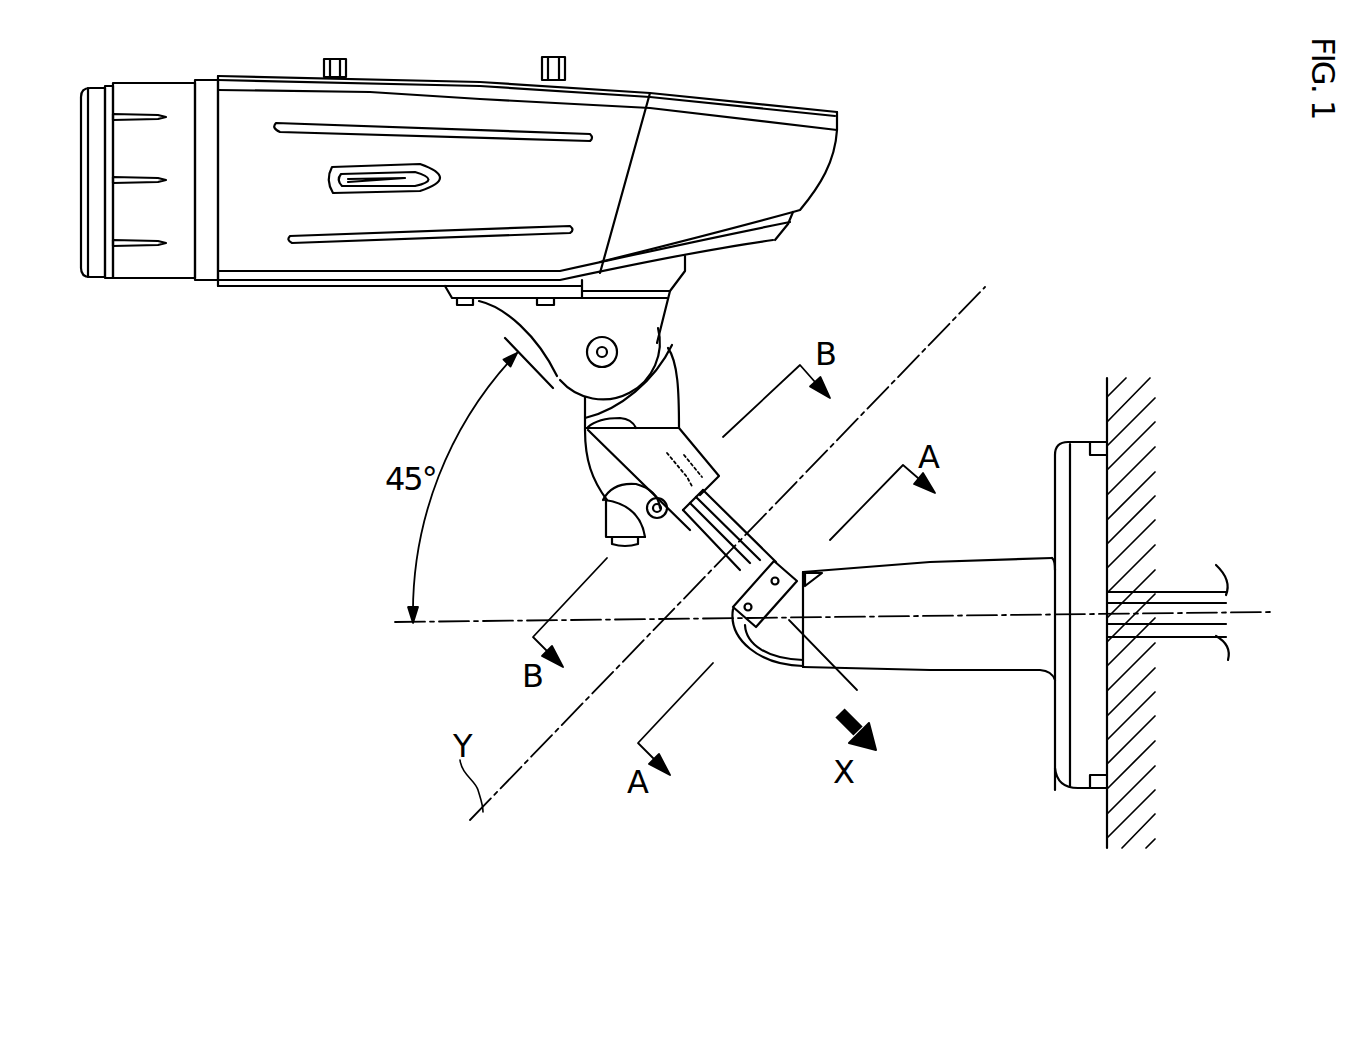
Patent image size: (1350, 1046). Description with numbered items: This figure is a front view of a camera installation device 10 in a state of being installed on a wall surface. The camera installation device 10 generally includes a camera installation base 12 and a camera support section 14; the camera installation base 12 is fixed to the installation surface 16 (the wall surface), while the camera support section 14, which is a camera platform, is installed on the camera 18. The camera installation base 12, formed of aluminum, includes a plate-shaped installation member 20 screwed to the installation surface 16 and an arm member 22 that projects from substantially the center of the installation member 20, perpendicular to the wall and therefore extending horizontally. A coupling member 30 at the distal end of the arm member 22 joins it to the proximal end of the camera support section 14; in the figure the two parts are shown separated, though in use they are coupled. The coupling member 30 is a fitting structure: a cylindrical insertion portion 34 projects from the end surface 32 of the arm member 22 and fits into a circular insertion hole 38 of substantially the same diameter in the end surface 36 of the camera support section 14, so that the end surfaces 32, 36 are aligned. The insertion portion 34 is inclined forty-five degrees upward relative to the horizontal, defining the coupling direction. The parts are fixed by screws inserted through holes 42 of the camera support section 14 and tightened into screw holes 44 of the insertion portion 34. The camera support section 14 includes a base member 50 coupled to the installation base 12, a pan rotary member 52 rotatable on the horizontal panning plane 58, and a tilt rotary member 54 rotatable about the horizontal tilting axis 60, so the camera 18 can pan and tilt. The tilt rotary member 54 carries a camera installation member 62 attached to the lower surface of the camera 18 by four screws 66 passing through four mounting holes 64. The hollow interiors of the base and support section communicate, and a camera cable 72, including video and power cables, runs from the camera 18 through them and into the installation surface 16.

The camera installation device 10 is at (738, 750).
The camera installation base 12 is at (987, 757).
The camera support section 14 is at (507, 570).
The installation surface 16 is at (1105, 402).
The camera 18 is at (805, 177).
The installation member 20 is at (1087, 467).
The arm member 22 is at (967, 577).
The coupling member 30 is at (697, 628).
The end surface 32 is at (800, 575).
The insertion portion 34 is at (803, 568).
The end surface 36 is at (725, 478).
The insertion hole 38 is at (700, 493).
The holes 42 is at (600, 519).
The screw holes 44 is at (735, 648).
The base member 50 is at (588, 479).
The pan rotary member 52 is at (668, 405).
The tilt rotary member 54 is at (648, 316).
The panning plane 58 is at (580, 420).
The tilting axis 60 is at (570, 374).
The camera installation member 62 is at (503, 300).
The mounting holes 64 is at (457, 300).
The screws 66 is at (461, 307).
The camera cable 72 is at (688, 540).